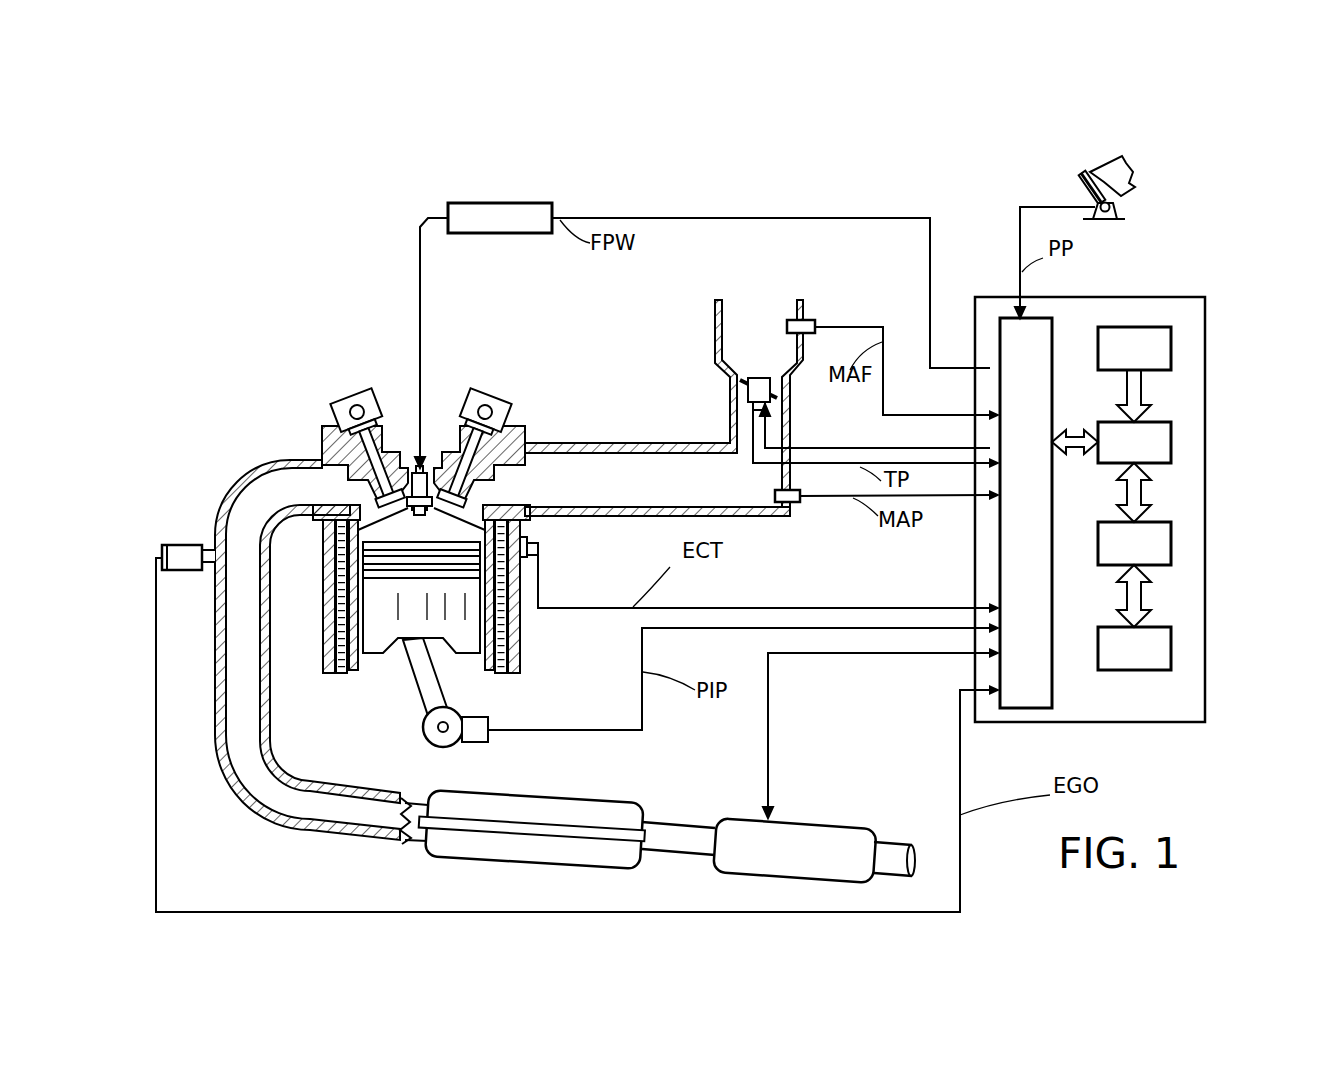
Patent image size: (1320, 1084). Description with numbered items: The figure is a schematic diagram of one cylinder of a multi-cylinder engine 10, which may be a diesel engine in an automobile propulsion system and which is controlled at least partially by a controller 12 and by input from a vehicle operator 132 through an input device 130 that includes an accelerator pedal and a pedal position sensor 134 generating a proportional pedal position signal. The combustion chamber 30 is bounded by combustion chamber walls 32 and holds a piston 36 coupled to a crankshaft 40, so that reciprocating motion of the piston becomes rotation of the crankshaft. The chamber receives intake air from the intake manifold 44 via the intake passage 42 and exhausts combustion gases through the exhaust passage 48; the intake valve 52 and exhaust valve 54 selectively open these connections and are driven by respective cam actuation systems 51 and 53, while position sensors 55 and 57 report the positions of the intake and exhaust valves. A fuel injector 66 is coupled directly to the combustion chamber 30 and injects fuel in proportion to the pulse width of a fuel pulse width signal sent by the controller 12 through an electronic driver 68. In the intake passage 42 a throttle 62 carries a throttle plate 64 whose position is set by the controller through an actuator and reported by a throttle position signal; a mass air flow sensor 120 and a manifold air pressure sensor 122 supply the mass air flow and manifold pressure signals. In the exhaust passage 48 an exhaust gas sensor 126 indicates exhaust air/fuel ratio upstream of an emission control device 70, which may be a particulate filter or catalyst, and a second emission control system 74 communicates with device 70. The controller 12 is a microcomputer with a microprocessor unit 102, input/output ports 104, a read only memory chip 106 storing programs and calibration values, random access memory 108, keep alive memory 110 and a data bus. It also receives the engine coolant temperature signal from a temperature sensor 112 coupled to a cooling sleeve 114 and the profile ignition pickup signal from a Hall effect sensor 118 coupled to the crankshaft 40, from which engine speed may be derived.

The engine 10 is at (255, 375).
The controller 12 is at (1195, 296).
The combustion chamber 30 is at (395, 527).
The combustion chamber walls 32 is at (366, 664).
The piston 36 is at (405, 625).
The crankshaft 40 is at (435, 747).
The intake passage 42 is at (771, 352).
The intake manifold 44 is at (709, 496).
The exhaust passage 48 is at (306, 501).
The cam actuation system 51 is at (478, 394).
The intake valve 52 is at (465, 489).
The cam actuation system 53 is at (365, 394).
The exhaust valve 54 is at (372, 505).
The position sensor 55 is at (516, 419).
The position sensor 57 is at (338, 418).
The throttle 62 is at (771, 384).
The throttle plate 64 is at (740, 382).
The fuel injector 66 is at (421, 464).
The electronic driver 68 is at (527, 234).
The emission control device 70 is at (598, 795).
The second emission control system 74 is at (858, 804).
The microprocessor unit 102 is at (1173, 438).
The input/output ports 104 is at (1055, 325).
The read only memory chip 106 is at (1173, 343).
The random access memory 108 is at (1173, 538).
The keep alive memory 110 is at (1173, 643).
The temperature sensor 112 is at (532, 556).
The cooling sleeve 114 is at (500, 627).
The Hall effect sensor 118 is at (478, 745).
The mass air flow sensor 120 is at (808, 321).
The manifold air pressure sensor 122 is at (795, 503).
The exhaust gas sensor 126 is at (162, 548).
The input device 130 is at (1083, 181).
The vehicle operator 132 is at (1133, 171).
The pedal position sensor 134 is at (1117, 208).